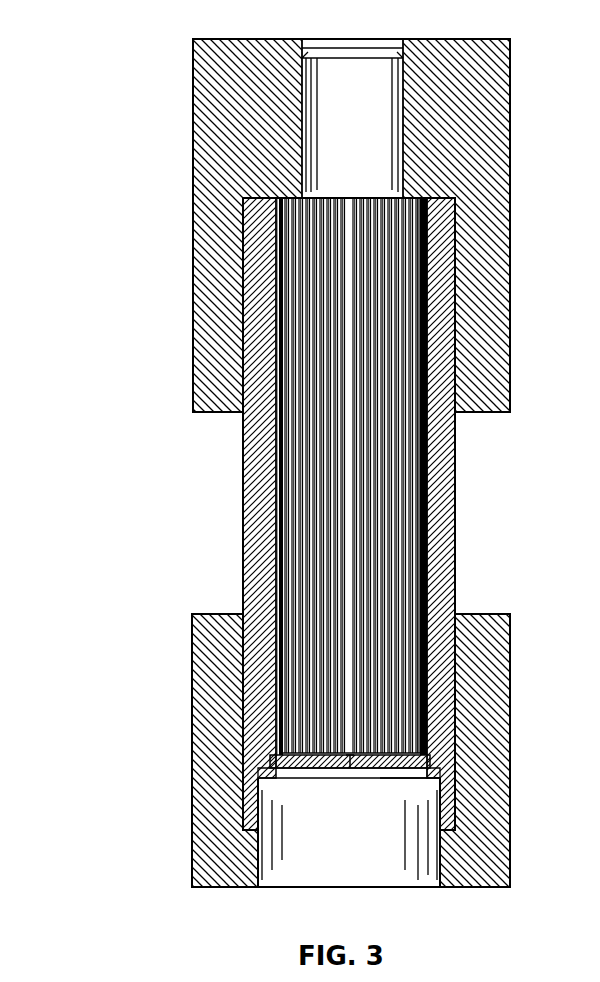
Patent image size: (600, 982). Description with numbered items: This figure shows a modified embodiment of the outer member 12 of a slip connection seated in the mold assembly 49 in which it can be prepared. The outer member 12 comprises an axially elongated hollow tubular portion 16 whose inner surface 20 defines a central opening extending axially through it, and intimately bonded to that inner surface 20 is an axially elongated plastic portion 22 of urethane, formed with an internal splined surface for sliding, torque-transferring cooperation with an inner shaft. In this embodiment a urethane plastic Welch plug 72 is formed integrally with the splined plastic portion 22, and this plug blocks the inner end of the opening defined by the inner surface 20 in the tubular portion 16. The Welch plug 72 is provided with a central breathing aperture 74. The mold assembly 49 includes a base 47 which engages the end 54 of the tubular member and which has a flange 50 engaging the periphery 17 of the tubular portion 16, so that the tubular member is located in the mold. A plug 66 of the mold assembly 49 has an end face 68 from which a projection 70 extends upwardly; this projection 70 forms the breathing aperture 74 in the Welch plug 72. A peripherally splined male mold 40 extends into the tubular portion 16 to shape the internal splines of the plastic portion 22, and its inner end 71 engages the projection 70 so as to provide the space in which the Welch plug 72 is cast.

The mold assembly 49 is at (150, 308).
The base 47 is at (493, 140).
The flange 50 is at (488, 353).
The end of the tubular member 54 is at (254, 192).
The outer member 12 is at (236, 516).
The tubular portion 16 is at (440, 512).
The periphery of the tubular portion 17 is at (455, 570).
The plastic portion 22 is at (275, 577).
The inner surface 20 is at (427, 436).
The male mold 40 is at (398, 478).
The inner end of the male mold 71 is at (292, 752).
The end face of the plug 68 is at (300, 773).
The central breathing aperture 74 is at (347, 766).
The projection 70 is at (383, 775).
The Welch plug 72 is at (410, 778).
The plug 66 is at (405, 878).